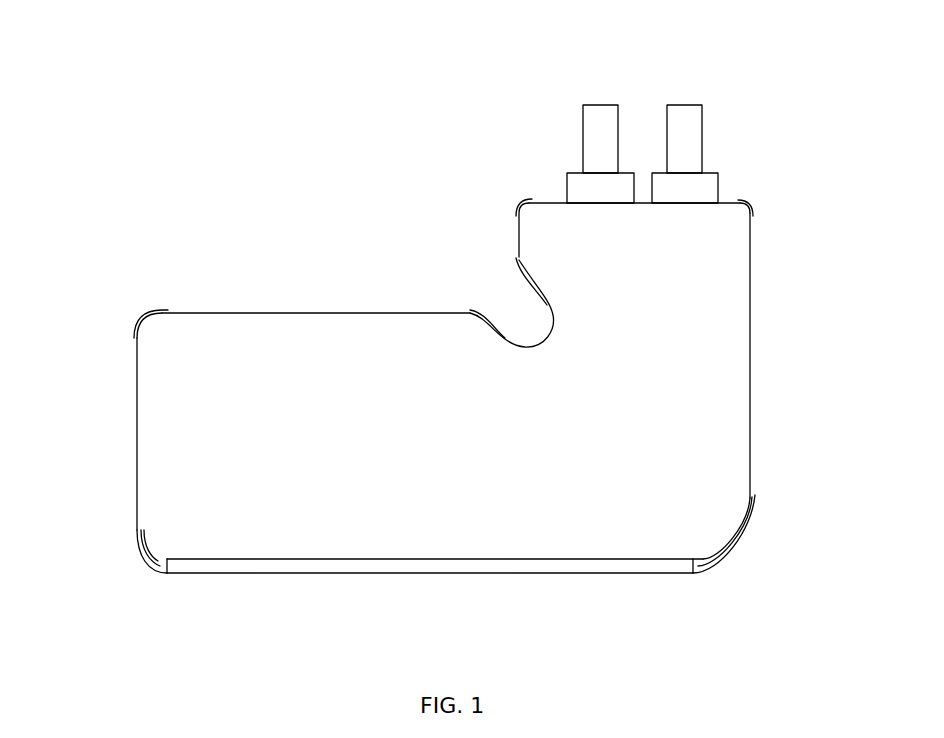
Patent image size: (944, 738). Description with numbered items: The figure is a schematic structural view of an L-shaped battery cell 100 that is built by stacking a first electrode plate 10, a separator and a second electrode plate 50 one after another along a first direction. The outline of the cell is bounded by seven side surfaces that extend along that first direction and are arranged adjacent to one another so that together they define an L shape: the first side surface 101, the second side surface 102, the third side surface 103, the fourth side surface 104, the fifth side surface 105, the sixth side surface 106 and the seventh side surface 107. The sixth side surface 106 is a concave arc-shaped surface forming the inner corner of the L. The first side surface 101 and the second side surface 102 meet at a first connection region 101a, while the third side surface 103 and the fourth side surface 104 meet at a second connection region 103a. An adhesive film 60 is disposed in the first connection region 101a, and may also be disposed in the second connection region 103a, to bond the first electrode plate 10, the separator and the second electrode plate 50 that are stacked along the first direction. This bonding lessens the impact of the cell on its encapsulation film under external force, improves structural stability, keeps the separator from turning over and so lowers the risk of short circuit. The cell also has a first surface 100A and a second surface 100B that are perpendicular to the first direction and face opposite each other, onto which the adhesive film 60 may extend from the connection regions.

The battery cell 100 is at (352, 66).
The first electrode plate 10 is at (702, 233).
The second electrode plate 50 is at (566, 186).
The adhesive film 60 is at (140, 560).
The fourth side surface 104 is at (643, 202).
The fifth side surface 105 is at (518, 232).
The sixth side surface 106 is at (527, 290).
The seventh side surface 107 is at (315, 313).
The first side surface 101 is at (137, 435).
The first connection region 101a is at (143, 552).
The second side surface 102 is at (364, 565).
The third side surface 103 is at (750, 375).
The second connection region 103a is at (737, 212).
The first surface 100A is at (578, 530).
The second surface 100B is at (462, 576).